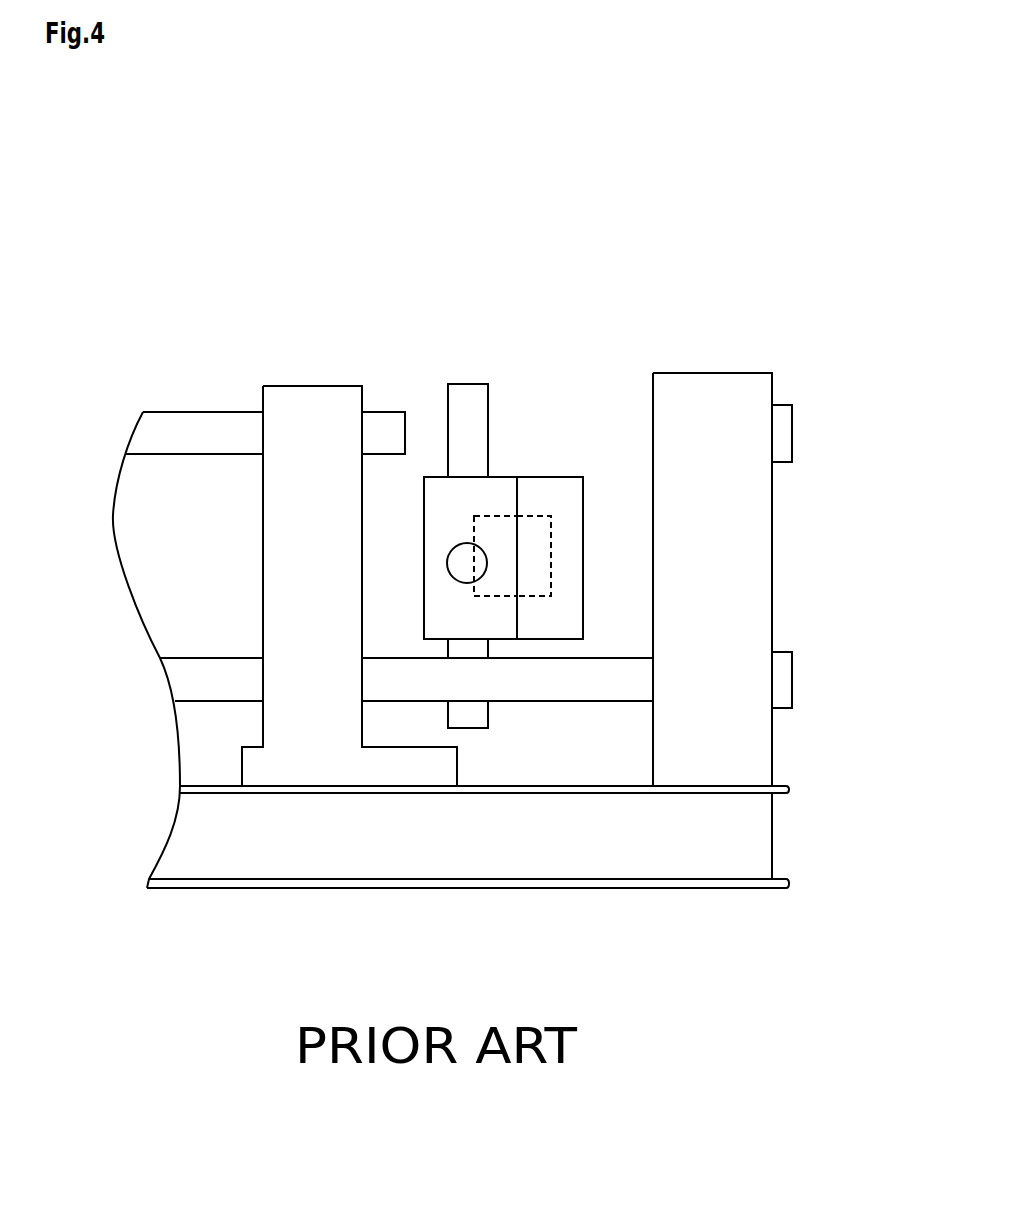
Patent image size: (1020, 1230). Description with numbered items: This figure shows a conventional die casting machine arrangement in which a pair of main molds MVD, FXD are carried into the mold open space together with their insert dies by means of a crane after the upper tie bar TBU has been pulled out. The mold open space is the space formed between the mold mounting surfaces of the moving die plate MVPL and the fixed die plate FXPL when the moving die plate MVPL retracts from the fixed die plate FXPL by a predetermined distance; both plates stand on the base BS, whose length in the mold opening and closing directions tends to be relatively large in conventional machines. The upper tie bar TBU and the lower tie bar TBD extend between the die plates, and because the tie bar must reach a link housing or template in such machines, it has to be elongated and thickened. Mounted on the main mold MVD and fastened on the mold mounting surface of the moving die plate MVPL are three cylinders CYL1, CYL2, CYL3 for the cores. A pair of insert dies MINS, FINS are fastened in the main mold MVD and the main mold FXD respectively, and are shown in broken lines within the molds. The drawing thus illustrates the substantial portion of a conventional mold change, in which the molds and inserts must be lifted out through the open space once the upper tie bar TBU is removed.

The upper tie bar TBU is at (195, 458).
The lower tie bar TBD is at (205, 702).
The moving die plate MVPL is at (261, 553).
The fixed die plate FXPL is at (720, 372).
The main mold MVD is at (506, 477).
The main mold FXD is at (560, 477).
The insert die MINS is at (492, 514).
The insert die FINS is at (553, 573).
The cylinder CYL1 is at (489, 712).
The cylinder CYL2 is at (447, 563).
The cylinder CYL3 is at (447, 404).
The base BS is at (527, 890).